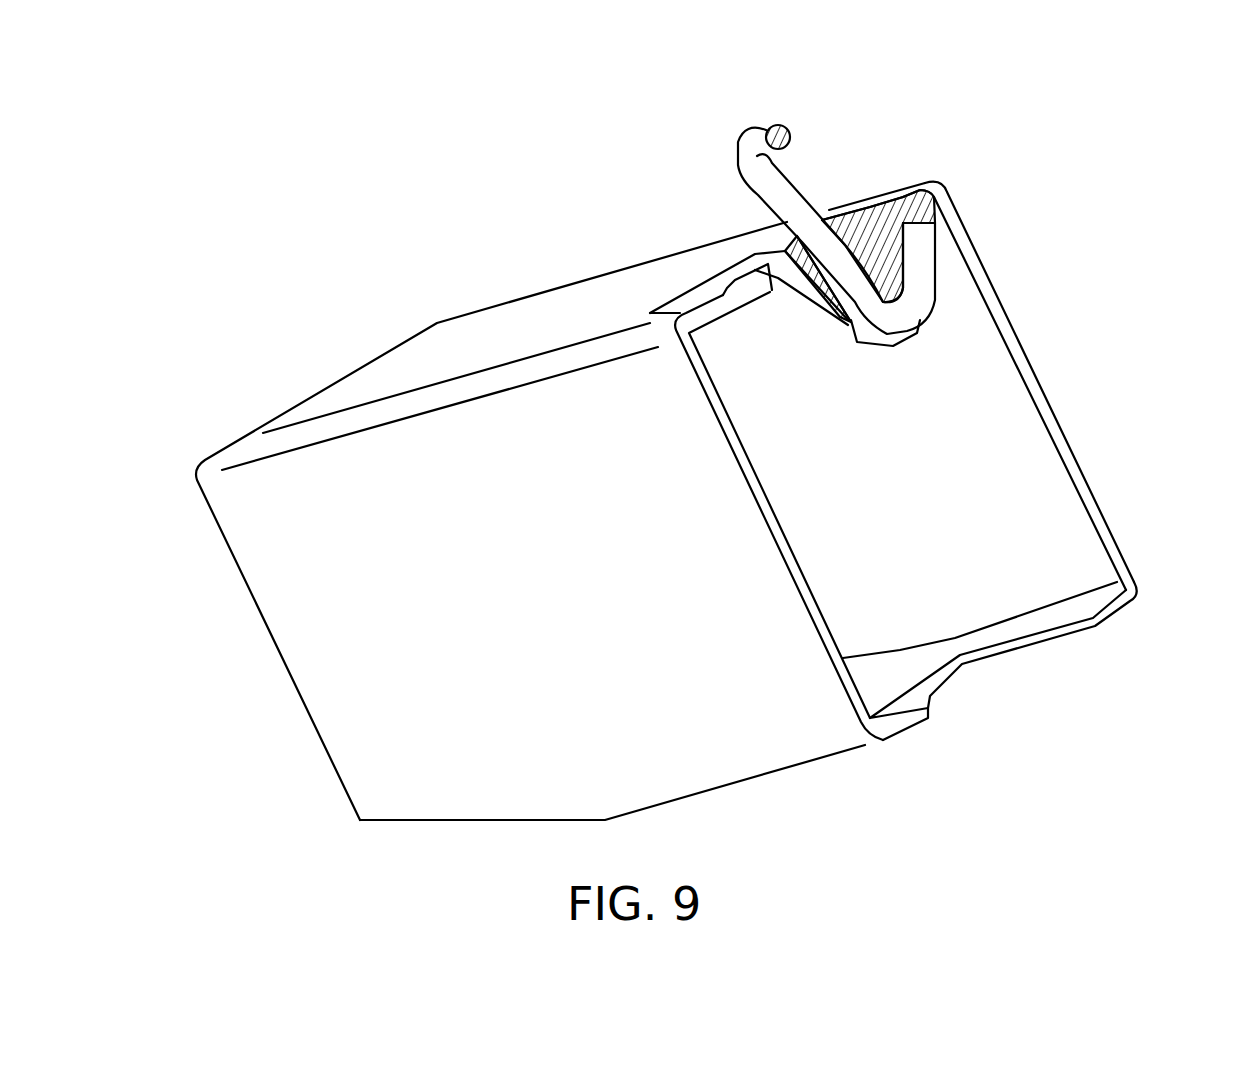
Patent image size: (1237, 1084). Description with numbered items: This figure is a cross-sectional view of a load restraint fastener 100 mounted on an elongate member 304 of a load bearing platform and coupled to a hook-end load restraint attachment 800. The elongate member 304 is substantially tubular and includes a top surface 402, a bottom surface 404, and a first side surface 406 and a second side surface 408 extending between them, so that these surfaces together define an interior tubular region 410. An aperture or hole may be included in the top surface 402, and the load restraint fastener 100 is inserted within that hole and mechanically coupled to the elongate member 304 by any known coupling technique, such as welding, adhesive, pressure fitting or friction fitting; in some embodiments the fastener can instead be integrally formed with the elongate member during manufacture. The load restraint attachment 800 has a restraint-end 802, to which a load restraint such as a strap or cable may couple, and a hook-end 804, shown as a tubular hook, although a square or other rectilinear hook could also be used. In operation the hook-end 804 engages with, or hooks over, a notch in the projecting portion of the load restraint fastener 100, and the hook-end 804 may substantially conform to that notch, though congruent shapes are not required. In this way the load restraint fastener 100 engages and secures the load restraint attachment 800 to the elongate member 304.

The load restraint fastener 100 is at (903, 193).
The elongate member 304 is at (479, 820).
The top surface 402 is at (547, 290).
The bottom surface 404 is at (1127, 603).
The first side surface 406 is at (822, 645).
The second side surface 408 is at (1100, 493).
The interior tubular region 410 is at (933, 595).
The load restraint attachment 800 is at (728, 142).
The restraint-end 802 is at (813, 107).
The hook-end 804 is at (938, 247).